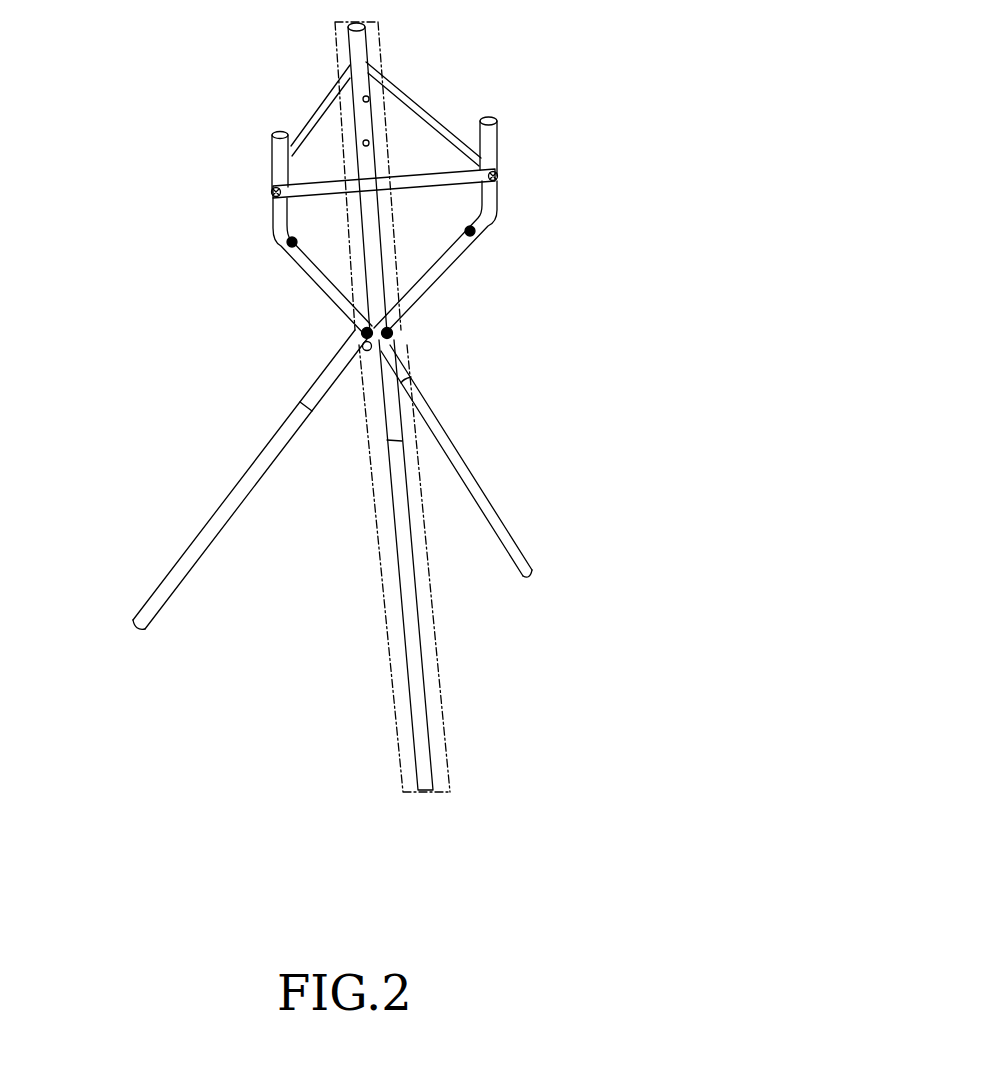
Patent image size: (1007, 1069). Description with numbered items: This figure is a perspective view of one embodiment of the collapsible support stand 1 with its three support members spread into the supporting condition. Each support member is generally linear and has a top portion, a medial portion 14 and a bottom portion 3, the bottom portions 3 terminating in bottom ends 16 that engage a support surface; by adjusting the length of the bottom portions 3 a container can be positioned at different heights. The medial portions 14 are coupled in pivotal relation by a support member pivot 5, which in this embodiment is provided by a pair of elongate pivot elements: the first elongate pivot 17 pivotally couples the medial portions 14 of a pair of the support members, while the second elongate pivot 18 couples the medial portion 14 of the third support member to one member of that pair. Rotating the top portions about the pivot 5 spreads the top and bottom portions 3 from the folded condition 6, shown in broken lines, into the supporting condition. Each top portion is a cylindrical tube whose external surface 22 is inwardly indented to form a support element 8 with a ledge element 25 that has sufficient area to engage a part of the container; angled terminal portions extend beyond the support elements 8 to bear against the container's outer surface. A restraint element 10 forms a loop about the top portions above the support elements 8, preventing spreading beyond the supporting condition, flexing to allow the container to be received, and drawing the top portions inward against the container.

The collapsible support stand 1 is at (692, 39).
The bottom portion 3 is at (350, 572).
The support member pivot 5 is at (417, 379).
The folded condition 6 is at (420, 468).
The support element 8 is at (357, 128).
The restraint element 10 is at (413, 107).
The medial portion 14 is at (327, 370).
The bottom end 16 is at (138, 625).
The first elongate pivot element 17 is at (392, 334).
The second elongate pivot element 18 is at (366, 352).
The external surface of top portion 22 is at (368, 98).
The ledge element 25 is at (366, 143).